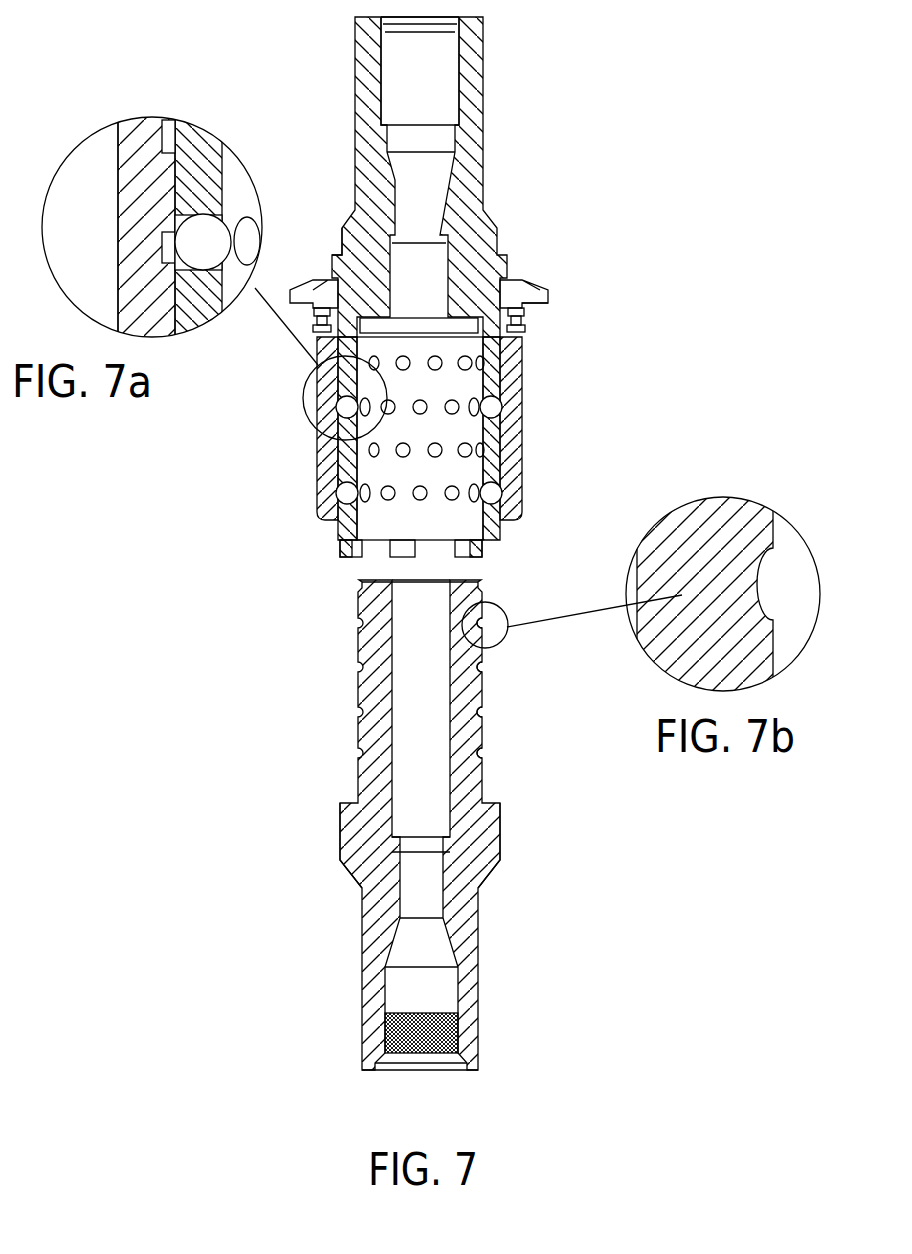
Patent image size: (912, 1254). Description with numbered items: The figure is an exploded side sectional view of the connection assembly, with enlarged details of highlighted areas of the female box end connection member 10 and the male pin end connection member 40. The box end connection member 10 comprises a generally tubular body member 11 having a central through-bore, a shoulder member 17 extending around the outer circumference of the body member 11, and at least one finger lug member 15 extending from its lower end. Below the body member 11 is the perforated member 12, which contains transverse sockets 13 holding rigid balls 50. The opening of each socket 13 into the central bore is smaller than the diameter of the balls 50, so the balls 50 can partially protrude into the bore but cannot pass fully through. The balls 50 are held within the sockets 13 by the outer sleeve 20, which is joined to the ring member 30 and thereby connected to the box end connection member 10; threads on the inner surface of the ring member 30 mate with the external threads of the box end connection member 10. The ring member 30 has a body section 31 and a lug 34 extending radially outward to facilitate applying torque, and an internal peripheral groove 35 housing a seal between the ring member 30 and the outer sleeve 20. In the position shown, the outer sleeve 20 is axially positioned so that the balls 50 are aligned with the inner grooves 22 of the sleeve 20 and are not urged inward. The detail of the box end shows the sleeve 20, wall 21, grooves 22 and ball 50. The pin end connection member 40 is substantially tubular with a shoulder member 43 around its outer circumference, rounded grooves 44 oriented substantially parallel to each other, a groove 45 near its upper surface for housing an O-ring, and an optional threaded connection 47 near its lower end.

In FIG. 7, the box end connection member 10 is at (488, 166).
In FIG. 7a, the box end connection member 10 is at (227, 176).
In FIG. 7, the tubular body member 11 is at (471, 88).
In FIG. 7, the perforated member 12 is at (502, 410).
In FIG. 7a, the perforated member 12 is at (200, 128).
In FIG. 7, the transverse sockets 13 is at (341, 458).
In FIG. 7, the finger lug member 15 is at (340, 552).
In FIG. 7, the shoulder member 17 is at (333, 262).
In FIG. 7, the outer sleeve 20 is at (316, 447).
In FIG. 7a, the outer sleeve 20 is at (114, 236).
In FIG. 7, the inner sleeve wall 21 is at (496, 380).
In FIG. 7a, the inner sleeve wall 21 is at (150, 207).
In FIG. 7, the inner grooves 22 is at (498, 452).
In FIG. 7a, the inner grooves 22 is at (158, 132).
In FIG. 7, the ring member 30 is at (310, 310).
In FIG. 7, the body section 31 is at (514, 284).
In FIG. 7, the lug 34 is at (548, 293).
In FIG. 7, the internal peripheral groove 35 is at (527, 329).
In FIG. 7, the pin end connection member 40 is at (490, 942).
In FIG. 7, the shoulder member 43 is at (490, 838).
In FIG. 7, the rounded grooves 44 is at (485, 667).
In FIG. 7b, the rounded grooves 44 is at (760, 556).
In FIG. 7, the groove 45 is at (360, 588).
In FIG. 7, the threaded connection 47 is at (478, 1027).
In FIG. 7, the rigid balls 50 is at (503, 491).
In FIG. 7a, the rigid balls 50 is at (203, 232).